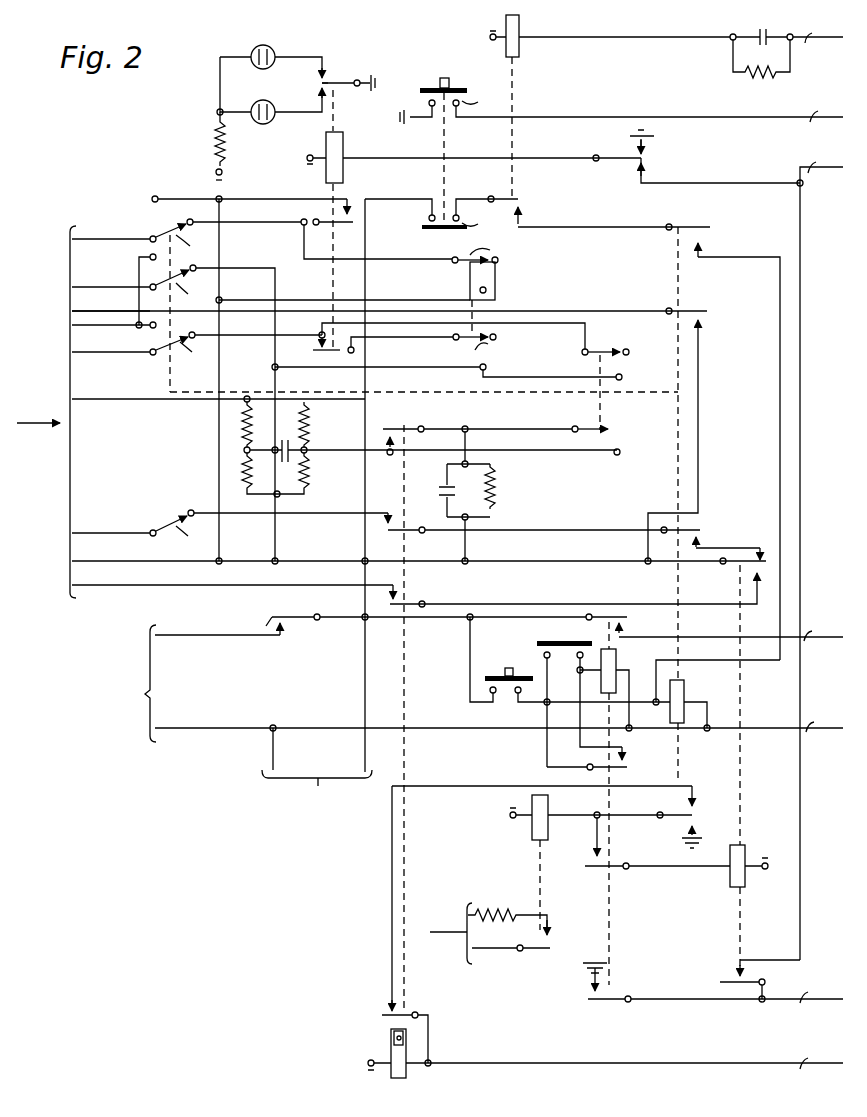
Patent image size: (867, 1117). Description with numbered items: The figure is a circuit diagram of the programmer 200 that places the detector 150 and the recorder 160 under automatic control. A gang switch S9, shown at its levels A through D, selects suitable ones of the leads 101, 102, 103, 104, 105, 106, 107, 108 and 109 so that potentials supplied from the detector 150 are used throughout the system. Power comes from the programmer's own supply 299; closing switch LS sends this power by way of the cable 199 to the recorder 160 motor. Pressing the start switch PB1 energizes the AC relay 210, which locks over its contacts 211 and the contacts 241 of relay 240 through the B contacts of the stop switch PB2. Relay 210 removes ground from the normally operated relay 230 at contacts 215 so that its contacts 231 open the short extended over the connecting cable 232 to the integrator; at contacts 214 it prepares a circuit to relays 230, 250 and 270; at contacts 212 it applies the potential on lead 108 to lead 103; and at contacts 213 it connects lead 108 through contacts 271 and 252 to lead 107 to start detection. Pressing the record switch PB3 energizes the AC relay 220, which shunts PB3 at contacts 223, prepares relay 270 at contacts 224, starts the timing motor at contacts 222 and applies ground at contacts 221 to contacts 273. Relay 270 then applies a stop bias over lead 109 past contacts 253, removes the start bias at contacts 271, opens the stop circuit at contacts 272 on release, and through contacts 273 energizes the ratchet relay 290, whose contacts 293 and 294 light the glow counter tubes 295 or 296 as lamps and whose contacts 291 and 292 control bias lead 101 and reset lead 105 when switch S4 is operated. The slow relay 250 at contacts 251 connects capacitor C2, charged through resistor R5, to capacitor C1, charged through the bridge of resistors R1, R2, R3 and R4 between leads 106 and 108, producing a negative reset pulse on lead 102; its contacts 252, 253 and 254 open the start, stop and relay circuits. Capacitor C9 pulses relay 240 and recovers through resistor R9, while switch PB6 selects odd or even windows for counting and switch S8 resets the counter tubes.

The programmer 200 is at (430, 561).
The decade glow counter tube 295 is at (275, 52).
The decade glow counter tube 296 is at (284, 98).
The contacts of relay 290 294 is at (326, 79).
The contacts of relay 290 293 is at (330, 90).
The ratchet relay 290 is at (326, 149).
The contacts of relay 290 291 is at (356, 226).
The contacts of relay 290 292 is at (312, 356).
The stop switch PB2 is at (604, 145).
The relay 240 is at (522, 44).
The capacitor C9 is at (760, 31).
The resistor R9 is at (775, 78).
The switch PB6 is at (645, 160).
The contacts of relay 240 241 is at (521, 205).
The contacts of relay 210 211 is at (712, 245).
The contacts of relay 210 212 is at (706, 318).
The switch S4 is at (497, 282).
The detector 150 is at (38, 398).
The glow counter tube bias lead 101 is at (120, 242).
The reset lead 102 is at (118, 289).
The lead 103 is at (117, 311).
The lead 104 is at (115, 329).
The glow counter tube reset lead 105 is at (152, 355).
The lead 106 is at (117, 403).
The start lead 107 is at (117, 533).
The potential lead 108 is at (117, 561).
The stop lead 109 is at (117, 586).
The programmer switch S9 is at (204, 380).
The switch S8 is at (606, 411).
The resistor R1 is at (240, 422).
The resistor R2 is at (240, 471).
The resistor R3 is at (308, 472).
The resistor R4 is at (308, 432).
The resistor R5 is at (494, 496).
The capacitor C1 is at (283, 459).
The capacitor C2 is at (441, 487).
The contacts of relay 250 251 is at (385, 430).
The contacts of relay 250 252 is at (400, 525).
The contacts of relay 250 253 is at (410, 603).
The contacts of relay 250 254 is at (385, 1010).
The relay 250 is at (378, 1056).
The contacts of relay 210 213 is at (700, 541).
The contacts of relay 270 271 is at (768, 559).
The contacts of relay 270 272 is at (755, 582).
The relay 270 is at (746, 861).
The contacts of relay 270 273 is at (722, 981).
The switch LS is at (446, 613).
The 110 volt supply 299 is at (130, 718).
The cable 199 is at (318, 795).
The recorder 160 is at (319, 850).
The contacts of relay 220 222 is at (624, 627).
The AC relay 220 is at (618, 668).
The contacts of relay 220 223 is at (625, 757).
The start switch PB1 is at (532, 670).
The record switch PB3 is at (589, 641).
The AC relay 210 is at (684, 686).
The contacts of relay 210 214 is at (698, 806).
The contacts of relay 210 215 is at (697, 830).
The contacts of relay 220 224 is at (604, 863).
The relay 230 is at (532, 830).
The contacts of relay 230 231 is at (542, 936).
The connecting cable 232 is at (436, 930).
The contacts of relay 220 221 is at (590, 996).